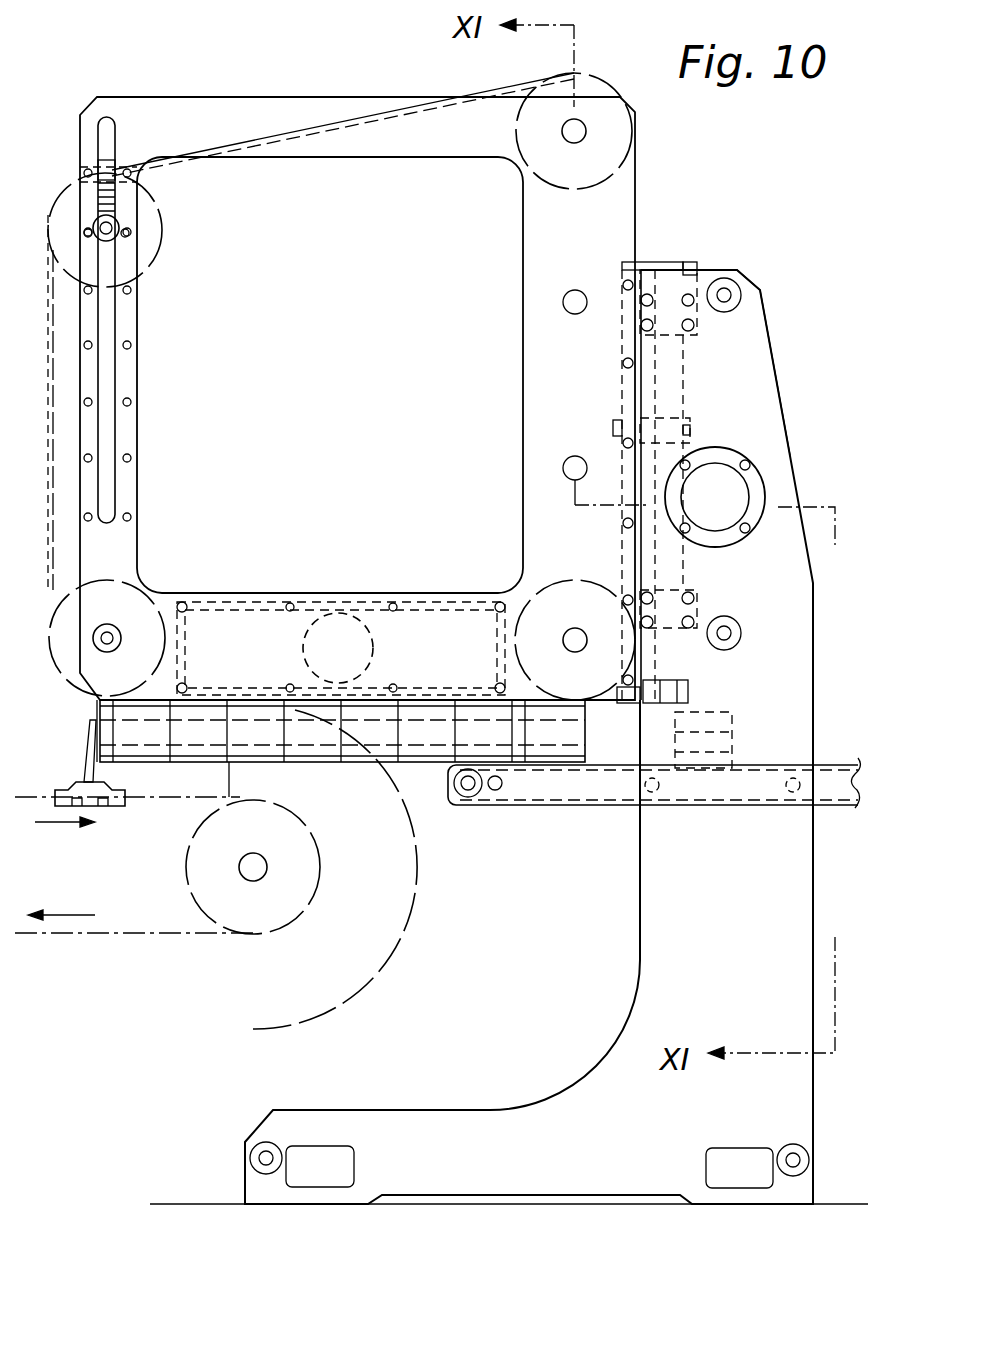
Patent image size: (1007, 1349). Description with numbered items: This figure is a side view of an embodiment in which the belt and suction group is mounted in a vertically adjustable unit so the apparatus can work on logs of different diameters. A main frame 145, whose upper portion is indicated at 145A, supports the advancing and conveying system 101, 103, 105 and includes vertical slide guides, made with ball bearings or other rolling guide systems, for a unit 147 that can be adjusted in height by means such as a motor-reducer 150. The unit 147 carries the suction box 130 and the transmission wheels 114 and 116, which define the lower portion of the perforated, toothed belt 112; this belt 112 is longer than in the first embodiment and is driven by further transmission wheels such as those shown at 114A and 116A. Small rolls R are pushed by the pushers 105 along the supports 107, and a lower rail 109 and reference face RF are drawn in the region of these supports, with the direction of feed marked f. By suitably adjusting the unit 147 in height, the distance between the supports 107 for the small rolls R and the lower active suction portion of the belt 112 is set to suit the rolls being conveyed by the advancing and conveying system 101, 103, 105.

The advancing and conveying system 101 is at (128, 938).
The advancing and conveying system 103 is at (292, 903).
The pushers 105 is at (85, 766).
The supports 107 is at (232, 780).
The lower rail 109 is at (559, 806).
The perforated, toothed belt 112 is at (452, 90).
The transmission wheel 114 is at (580, 592).
The transmission wheel 114A is at (540, 168).
The transmission wheel 116 is at (138, 577).
The transmission wheel 116A is at (152, 247).
The suction box 130 is at (430, 600).
The main frame 145 is at (652, 958).
The frame upper portion 145A is at (702, 275).
The unit 147 is at (137, 383).
The motor-reducer 150 is at (744, 452).
The small rolls R is at (738, 690).
The reference face RF is at (97, 710).
The feed direction f is at (55, 828).